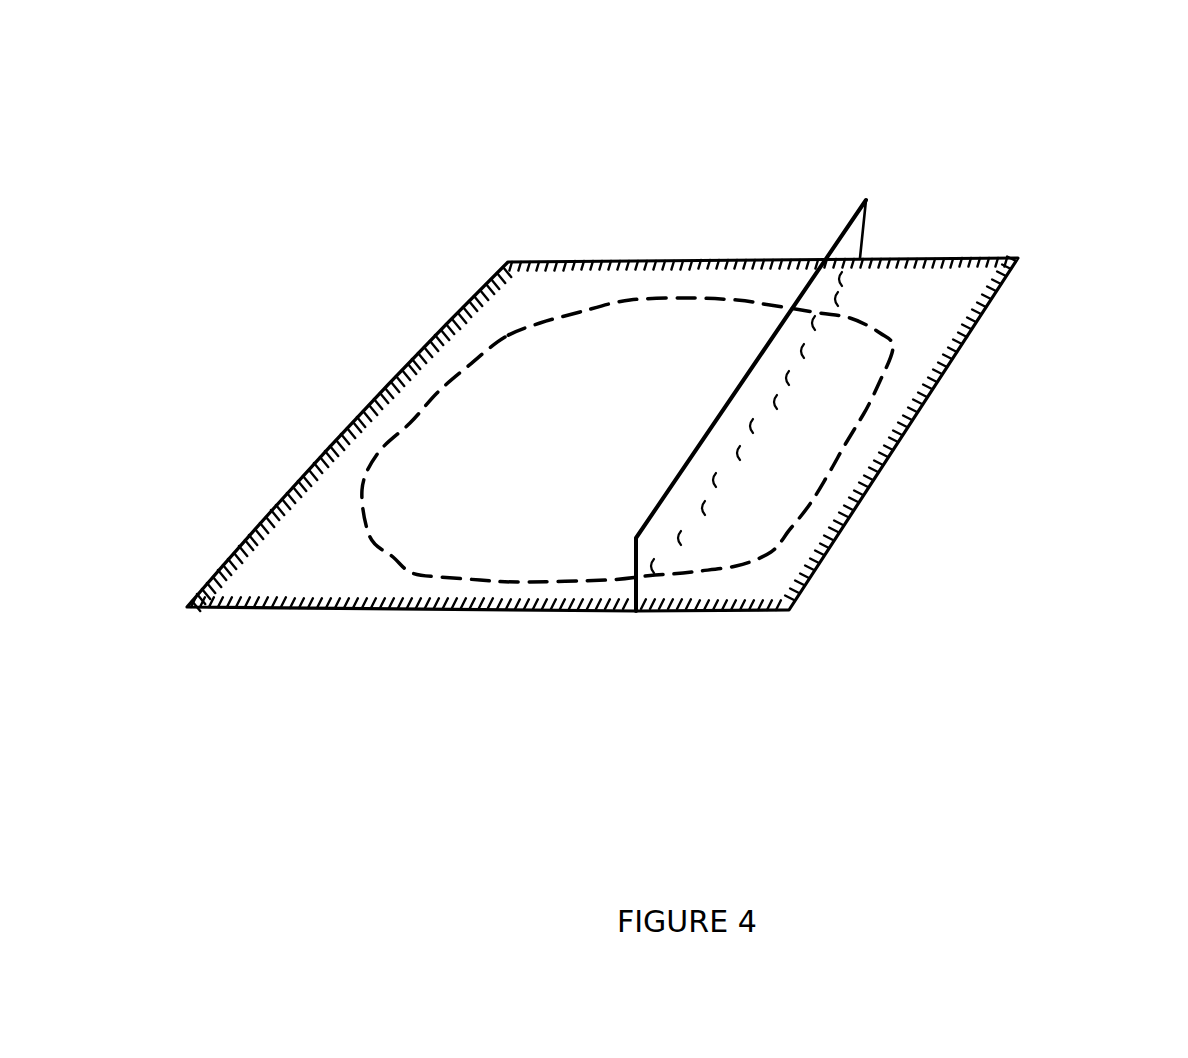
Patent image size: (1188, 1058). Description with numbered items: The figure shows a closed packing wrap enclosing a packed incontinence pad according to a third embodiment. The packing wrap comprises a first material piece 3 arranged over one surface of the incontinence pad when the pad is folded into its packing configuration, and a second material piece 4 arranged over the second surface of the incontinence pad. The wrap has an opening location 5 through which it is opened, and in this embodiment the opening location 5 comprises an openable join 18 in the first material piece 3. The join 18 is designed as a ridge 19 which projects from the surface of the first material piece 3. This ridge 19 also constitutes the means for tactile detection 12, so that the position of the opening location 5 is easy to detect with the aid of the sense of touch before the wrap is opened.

The first material piece 3 is at (598, 528).
The second material piece 4 is at (487, 535).
The openable join 18 is at (808, 283).
The opening location 5 is at (755, 387).
The ridge 19 is at (718, 442).
The means for tactile detection 12 is at (700, 482).